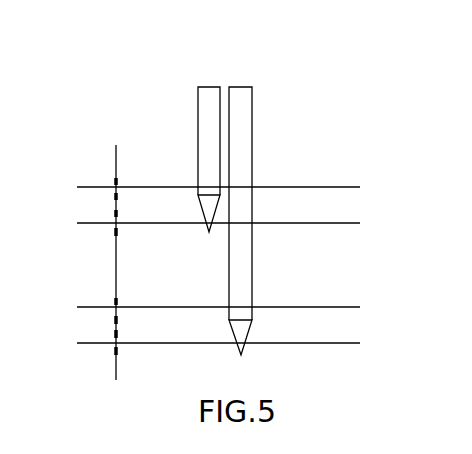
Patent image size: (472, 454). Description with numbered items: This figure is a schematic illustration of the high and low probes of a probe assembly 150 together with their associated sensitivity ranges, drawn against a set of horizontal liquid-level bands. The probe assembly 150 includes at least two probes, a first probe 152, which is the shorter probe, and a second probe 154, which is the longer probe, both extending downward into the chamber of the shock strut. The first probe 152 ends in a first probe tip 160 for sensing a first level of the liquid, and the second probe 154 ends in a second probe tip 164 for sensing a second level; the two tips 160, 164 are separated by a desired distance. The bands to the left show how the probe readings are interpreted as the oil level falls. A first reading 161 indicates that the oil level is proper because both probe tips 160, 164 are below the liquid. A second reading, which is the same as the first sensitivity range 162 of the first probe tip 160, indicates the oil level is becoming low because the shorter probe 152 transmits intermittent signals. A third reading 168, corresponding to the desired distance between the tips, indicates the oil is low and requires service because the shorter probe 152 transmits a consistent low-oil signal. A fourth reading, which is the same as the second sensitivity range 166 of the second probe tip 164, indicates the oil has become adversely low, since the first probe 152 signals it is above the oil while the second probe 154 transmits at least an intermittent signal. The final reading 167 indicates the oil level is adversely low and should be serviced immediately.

The probe assembly 150 is at (318, 57).
The first probe 152 is at (199, 88).
The second probe 154 is at (251, 88).
The first probe tip 160 is at (200, 212).
The second probe tip 164 is at (231, 322).
The first reading 161 is at (115, 159).
The first sensitivity range 162 is at (115, 206).
The third reading 168 is at (115, 262).
The second sensitivity range 166 is at (115, 325).
The final reading 167 is at (115, 362).